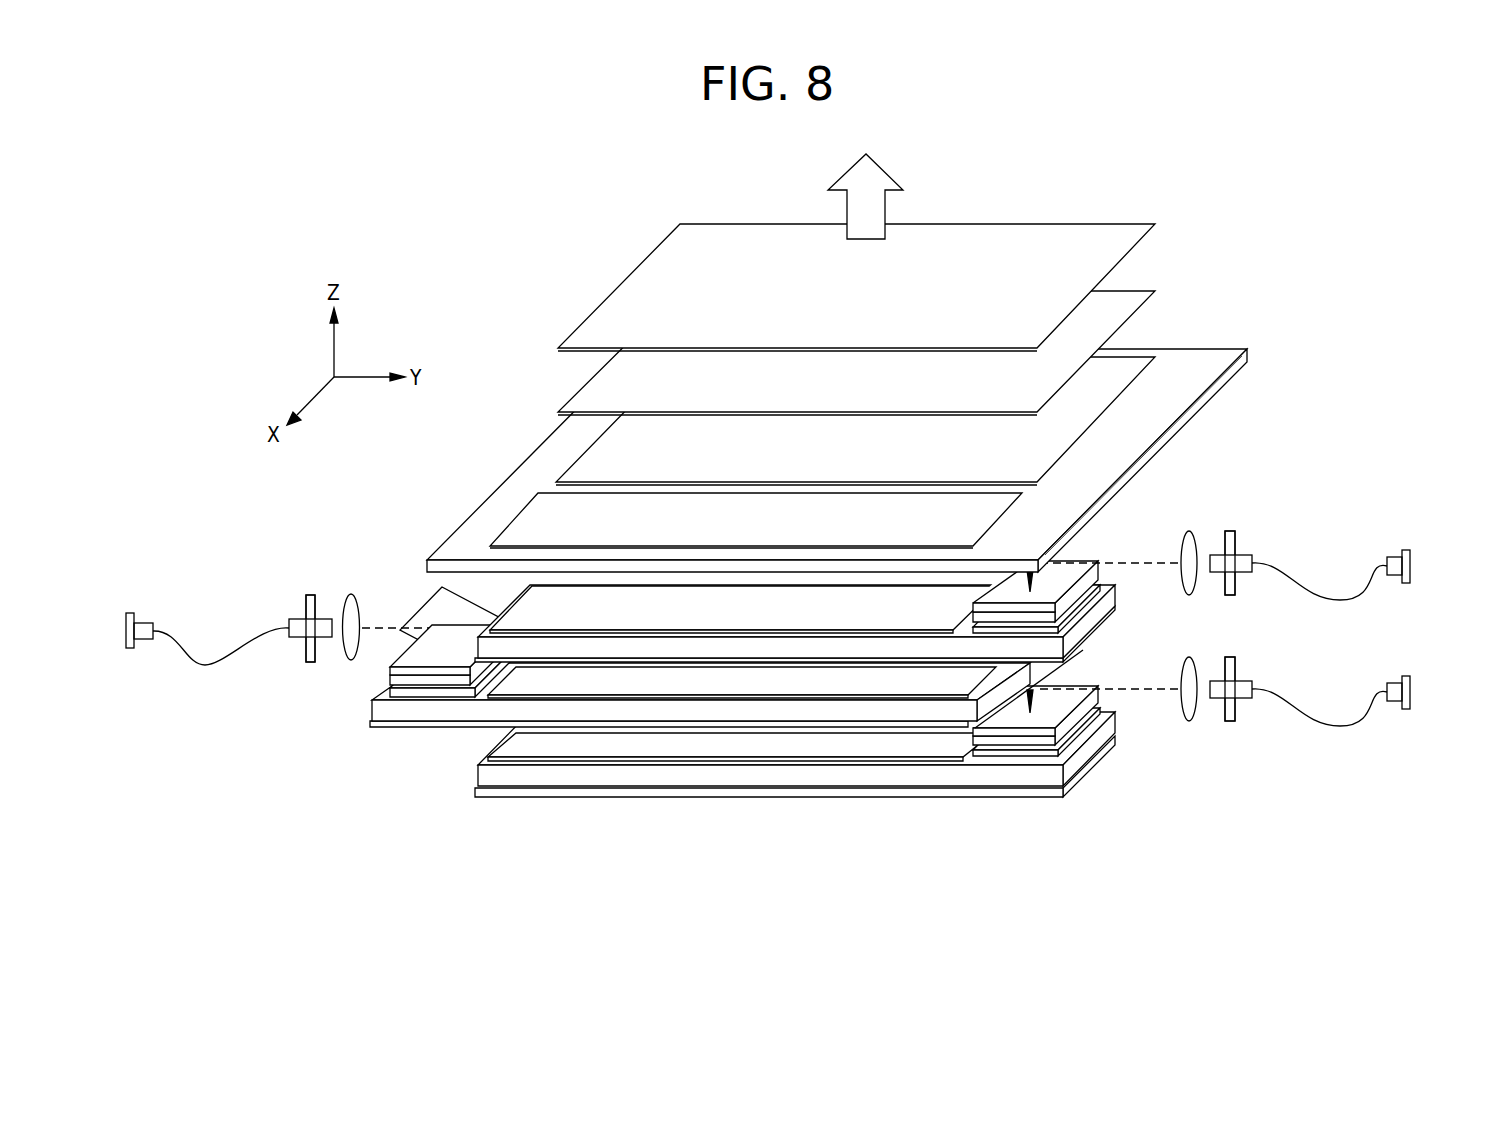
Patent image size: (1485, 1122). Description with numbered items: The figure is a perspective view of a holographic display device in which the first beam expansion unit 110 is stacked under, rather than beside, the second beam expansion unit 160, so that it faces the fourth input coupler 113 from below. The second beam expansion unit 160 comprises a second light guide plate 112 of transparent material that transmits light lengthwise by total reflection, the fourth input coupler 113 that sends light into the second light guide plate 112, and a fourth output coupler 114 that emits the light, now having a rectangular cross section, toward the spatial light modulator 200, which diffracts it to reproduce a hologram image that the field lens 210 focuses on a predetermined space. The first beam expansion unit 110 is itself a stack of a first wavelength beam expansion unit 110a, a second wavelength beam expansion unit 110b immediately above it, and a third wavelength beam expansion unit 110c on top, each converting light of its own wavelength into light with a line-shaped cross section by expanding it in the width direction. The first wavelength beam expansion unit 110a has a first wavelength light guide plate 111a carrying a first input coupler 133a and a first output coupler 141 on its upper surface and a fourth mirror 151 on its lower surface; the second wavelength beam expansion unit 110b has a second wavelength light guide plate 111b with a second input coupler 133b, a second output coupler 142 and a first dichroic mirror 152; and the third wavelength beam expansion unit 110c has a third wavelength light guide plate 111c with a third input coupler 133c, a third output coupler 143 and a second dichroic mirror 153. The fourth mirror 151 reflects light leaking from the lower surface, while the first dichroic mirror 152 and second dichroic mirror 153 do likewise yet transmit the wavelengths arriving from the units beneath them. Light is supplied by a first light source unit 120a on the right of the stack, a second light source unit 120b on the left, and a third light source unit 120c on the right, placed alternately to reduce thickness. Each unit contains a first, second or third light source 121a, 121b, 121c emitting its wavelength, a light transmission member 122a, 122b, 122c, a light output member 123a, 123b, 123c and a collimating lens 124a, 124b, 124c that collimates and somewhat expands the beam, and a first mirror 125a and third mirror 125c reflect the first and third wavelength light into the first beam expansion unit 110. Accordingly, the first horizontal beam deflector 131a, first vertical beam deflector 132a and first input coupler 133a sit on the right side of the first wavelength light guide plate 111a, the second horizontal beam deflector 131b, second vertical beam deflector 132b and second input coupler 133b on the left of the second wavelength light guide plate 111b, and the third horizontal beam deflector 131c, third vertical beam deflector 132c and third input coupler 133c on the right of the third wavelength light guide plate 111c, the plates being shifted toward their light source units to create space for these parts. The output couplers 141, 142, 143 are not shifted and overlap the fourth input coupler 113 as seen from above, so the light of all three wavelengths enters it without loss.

The first beam expansion unit 110 is at (782, 678).
The first wavelength beam expansion unit 110a is at (1083, 780).
The second wavelength beam expansion unit 110b is at (383, 712).
The third wavelength beam expansion unit 110c is at (1089, 587).
The first wavelength light guide plate 111a is at (662, 773).
The second wavelength light guide plate 111b is at (703, 708).
The third wavelength light guide plate 111c is at (747, 647).
The second light guide plate 112 is at (1215, 389).
The fourth input coupler 113 is at (523, 518).
The fourth output coupler 114 is at (1143, 363).
The first light source unit 120a is at (1311, 713).
The second light source unit 120b is at (246, 634).
The third light source unit 120c is at (1321, 548).
The first light source 121a is at (1408, 682).
The second light source 121b is at (132, 613).
The third light source 121c is at (1408, 557).
The first light transmission member 122a is at (1313, 707).
The second light transmission member 122b is at (223, 652).
The third light transmission member 122c is at (1302, 582).
The first light output member 123a is at (1230, 723).
The second light output member 123b is at (310, 595).
The third light output member 123c is at (1232, 533).
The first collimating lens 124a is at (1190, 722).
The second collimating lens 124b is at (355, 595).
The third collimating lens 124c is at (1192, 530).
The first mirror 125a is at (1005, 707).
The third mirror 125c is at (1005, 580).
The first horizontal beam deflector 131a is at (1020, 733).
The second horizontal beam deflector 131b is at (390, 670).
The third horizontal beam deflector 131c is at (1095, 585).
The first vertical beam deflector 132a is at (1035, 747).
The second vertical beam deflector 132b is at (408, 685).
The third vertical beam deflector 132c is at (1078, 600).
The first input coupler 133a is at (1075, 740).
The second input coupler 133b is at (432, 695).
The third input coupler 133c is at (1070, 614).
The first output coupler 141 is at (530, 742).
The second output coupler 142 is at (567, 680).
The third output coupler 143 is at (605, 610).
The fourth mirror 151 is at (812, 788).
The first dichroic mirror 152 is at (848, 728).
The second dichroic mirror 153 is at (890, 665).
The second beam expansion unit 160 is at (888, 442).
The spatial light modulator 200 is at (1157, 230).
The field lens 210 is at (1157, 296).